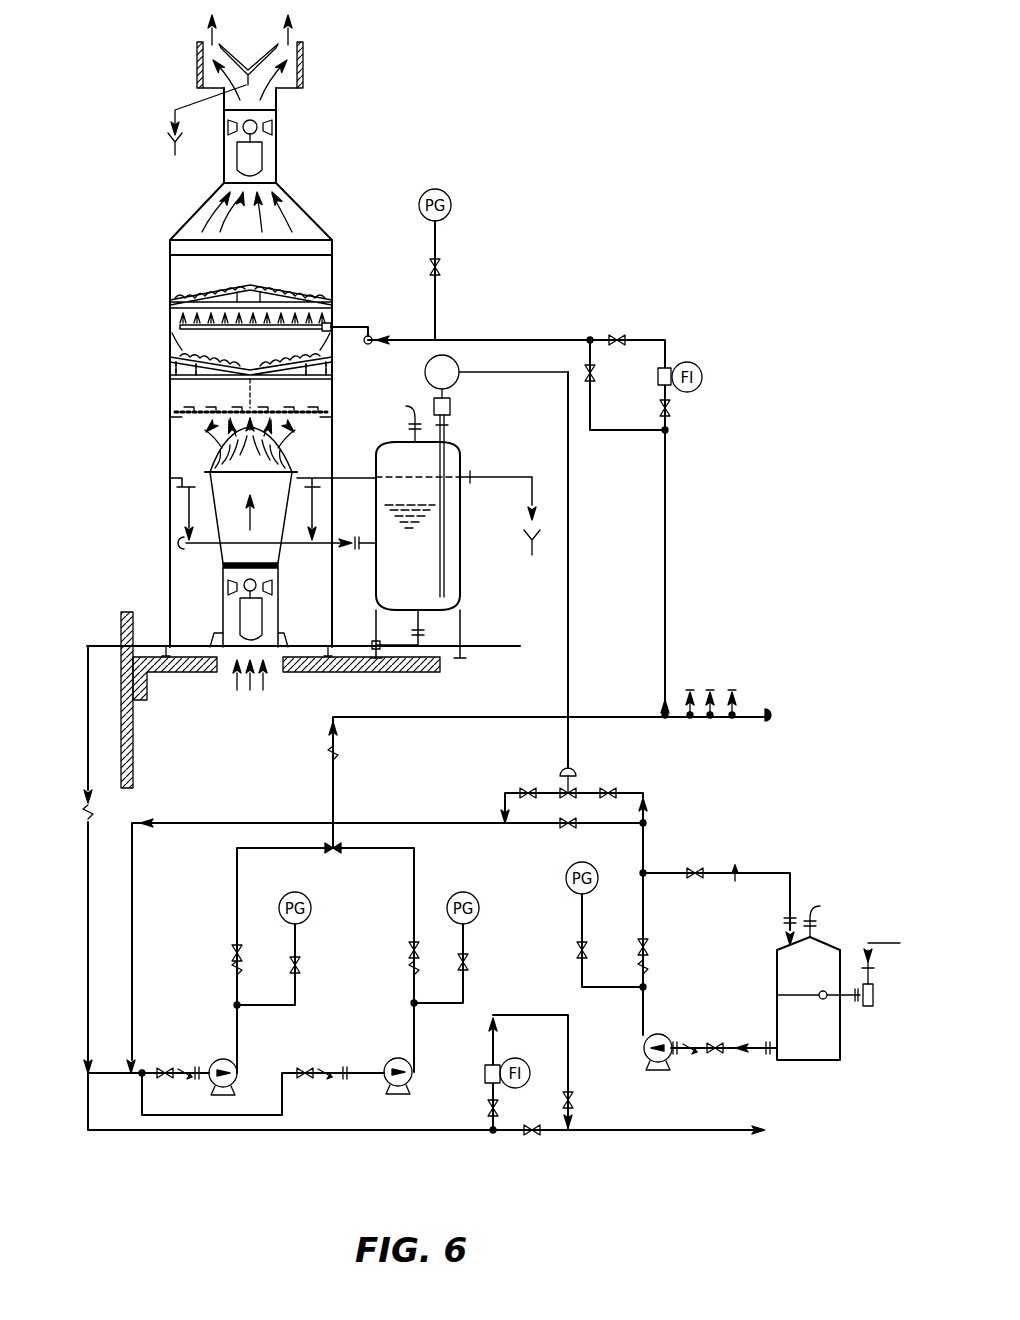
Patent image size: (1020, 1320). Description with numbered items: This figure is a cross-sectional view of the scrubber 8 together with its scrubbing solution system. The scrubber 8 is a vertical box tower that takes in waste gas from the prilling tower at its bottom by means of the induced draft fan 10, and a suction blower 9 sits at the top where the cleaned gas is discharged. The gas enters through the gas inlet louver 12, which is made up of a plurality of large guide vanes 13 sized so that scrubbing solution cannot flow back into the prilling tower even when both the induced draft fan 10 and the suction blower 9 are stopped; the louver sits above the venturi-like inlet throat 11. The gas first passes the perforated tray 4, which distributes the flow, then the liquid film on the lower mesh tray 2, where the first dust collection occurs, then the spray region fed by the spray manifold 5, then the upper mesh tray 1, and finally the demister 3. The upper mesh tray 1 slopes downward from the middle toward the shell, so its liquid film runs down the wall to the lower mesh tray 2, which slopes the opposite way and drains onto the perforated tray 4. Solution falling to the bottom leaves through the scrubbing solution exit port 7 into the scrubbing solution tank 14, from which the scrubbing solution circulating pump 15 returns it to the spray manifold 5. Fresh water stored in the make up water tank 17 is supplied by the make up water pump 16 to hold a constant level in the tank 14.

The upper mesh tray 1 is at (190, 292).
The lower mesh tray 2 is at (190, 368).
The demister 3 is at (182, 240).
The perforated tray 4 is at (190, 412).
The spray manifold 5 is at (200, 327).
The scrubbing solution exit port 7 is at (182, 482).
The scrubber 8 is at (195, 208).
The suction blower 9 is at (224, 147).
The induced draft fan 10 is at (225, 605).
The venturi 11 is at (215, 502).
The gas inlet louver 12 is at (212, 472).
The guide vanes 13 is at (225, 448).
The scrubbing solution tank 14 is at (455, 440).
The scrubbing solution circulating pump 15 is at (225, 1058).
The make up water pump 16 is at (645, 1050).
The make up water tank 17 is at (826, 935).